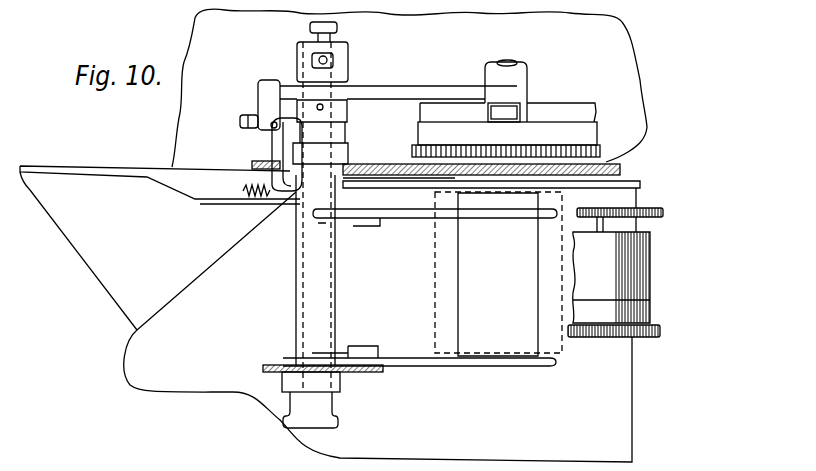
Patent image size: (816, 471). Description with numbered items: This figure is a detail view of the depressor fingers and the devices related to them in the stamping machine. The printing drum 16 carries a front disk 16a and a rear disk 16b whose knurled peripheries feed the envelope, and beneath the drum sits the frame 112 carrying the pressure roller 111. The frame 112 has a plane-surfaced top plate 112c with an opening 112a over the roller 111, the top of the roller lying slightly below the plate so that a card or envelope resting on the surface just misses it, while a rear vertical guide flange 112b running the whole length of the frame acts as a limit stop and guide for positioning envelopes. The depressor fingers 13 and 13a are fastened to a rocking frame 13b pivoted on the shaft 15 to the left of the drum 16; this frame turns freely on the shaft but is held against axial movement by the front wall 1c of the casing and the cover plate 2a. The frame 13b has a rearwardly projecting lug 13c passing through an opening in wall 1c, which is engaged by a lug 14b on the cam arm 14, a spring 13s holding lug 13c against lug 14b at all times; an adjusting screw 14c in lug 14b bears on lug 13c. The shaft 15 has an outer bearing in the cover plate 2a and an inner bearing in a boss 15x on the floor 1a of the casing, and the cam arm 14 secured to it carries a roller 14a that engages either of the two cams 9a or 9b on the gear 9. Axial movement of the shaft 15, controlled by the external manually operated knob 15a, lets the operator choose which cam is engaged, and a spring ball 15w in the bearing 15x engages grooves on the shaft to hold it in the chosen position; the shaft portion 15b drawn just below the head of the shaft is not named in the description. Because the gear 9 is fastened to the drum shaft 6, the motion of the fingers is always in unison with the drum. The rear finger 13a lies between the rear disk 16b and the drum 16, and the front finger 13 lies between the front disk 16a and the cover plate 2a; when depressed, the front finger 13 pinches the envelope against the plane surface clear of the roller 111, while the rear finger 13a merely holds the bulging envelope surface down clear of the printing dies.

The floor of the casing 1a is at (636, 56).
The front wall of the casing 1c is at (358, 164).
The cover plate 2a is at (383, 373).
The drum shaft 6 is at (508, 63).
The gear 9 is at (533, 145).
The cam 9a is at (598, 135).
The cam 9b is at (597, 111).
The front depressor finger 13 is at (476, 361).
The rear depressor finger 13a is at (413, 217).
The rocking frame 13b is at (295, 297).
The rearwardly projecting lug 13c is at (272, 150).
The spring 13s is at (266, 200).
The cam arm 14 is at (421, 87).
The roller 14a is at (527, 100).
The forwardly projecting lug 14b is at (258, 98).
The adjusting screw 14c is at (270, 126).
The shaft 15 is at (338, 28).
The manually operated knob 15a is at (339, 424).
The pin neck 15b is at (333, 37).
The spring ball 15w is at (336, 60).
The boss 15x is at (298, 42).
The drum 16 is at (651, 263).
The front disk 16a is at (660, 336).
The rear disk 16b is at (656, 208).
The pressure roller 111 is at (433, 294).
The frame 112 is at (634, 440).
The opening 112a is at (540, 345).
The rear vertical guide flange 112b is at (110, 168).
The top plate 112c is at (453, 439).